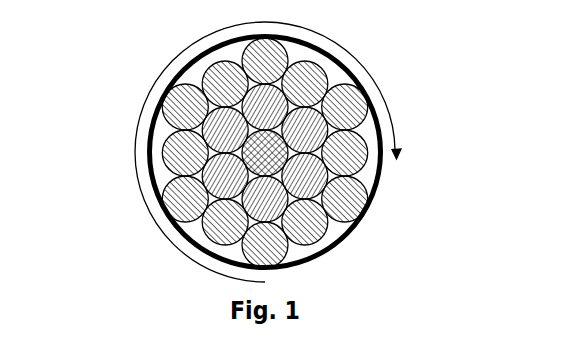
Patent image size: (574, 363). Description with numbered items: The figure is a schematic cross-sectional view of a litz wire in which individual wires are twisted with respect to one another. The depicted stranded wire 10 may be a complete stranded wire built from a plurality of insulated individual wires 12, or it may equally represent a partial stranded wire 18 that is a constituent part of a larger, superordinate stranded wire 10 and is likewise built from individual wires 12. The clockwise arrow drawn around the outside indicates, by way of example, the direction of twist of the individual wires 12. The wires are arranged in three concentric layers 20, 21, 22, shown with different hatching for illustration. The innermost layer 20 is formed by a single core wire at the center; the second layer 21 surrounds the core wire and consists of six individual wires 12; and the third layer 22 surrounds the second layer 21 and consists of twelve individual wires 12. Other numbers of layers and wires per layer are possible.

The stranded wire 10 is at (147, 110).
The individual wire 12 is at (354, 166).
The partial stranded wire 18 is at (147, 110).
The innermost layer 20 is at (369, 146).
The second layer 21 is at (338, 120).
The third layer 22 is at (328, 75).